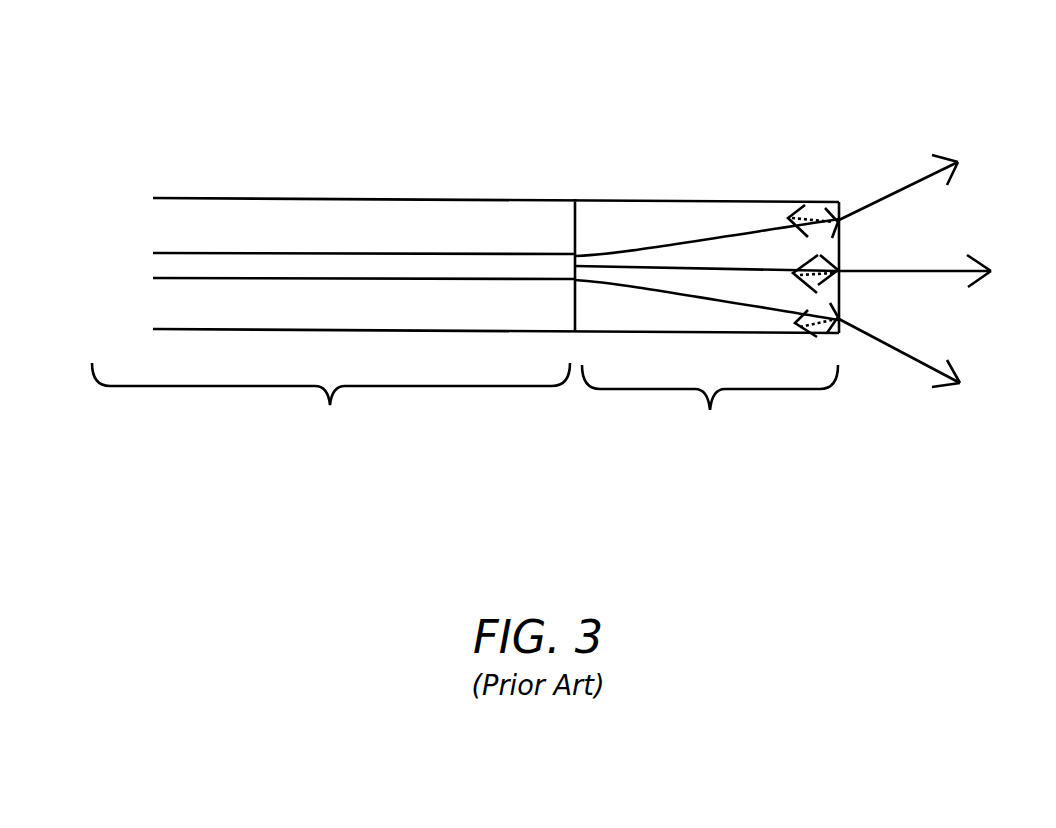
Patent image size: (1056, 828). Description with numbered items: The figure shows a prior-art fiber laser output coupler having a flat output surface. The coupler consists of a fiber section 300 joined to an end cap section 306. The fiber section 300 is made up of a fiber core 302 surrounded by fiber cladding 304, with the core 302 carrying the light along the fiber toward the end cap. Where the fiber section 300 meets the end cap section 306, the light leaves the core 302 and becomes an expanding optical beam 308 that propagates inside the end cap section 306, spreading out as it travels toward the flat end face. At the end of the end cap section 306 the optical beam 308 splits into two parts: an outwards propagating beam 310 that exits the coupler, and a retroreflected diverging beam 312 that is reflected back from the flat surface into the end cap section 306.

The fiber section 300 is at (330, 405).
The fiber core 302 is at (353, 253).
The fiber cladding 304 is at (353, 198).
The end cap section 306 is at (710, 410).
The expanding optical beam 308 is at (697, 295).
The outwards propagating beam 310 is at (960, 162).
The retroreflected diverging beam 312 is at (803, 218).